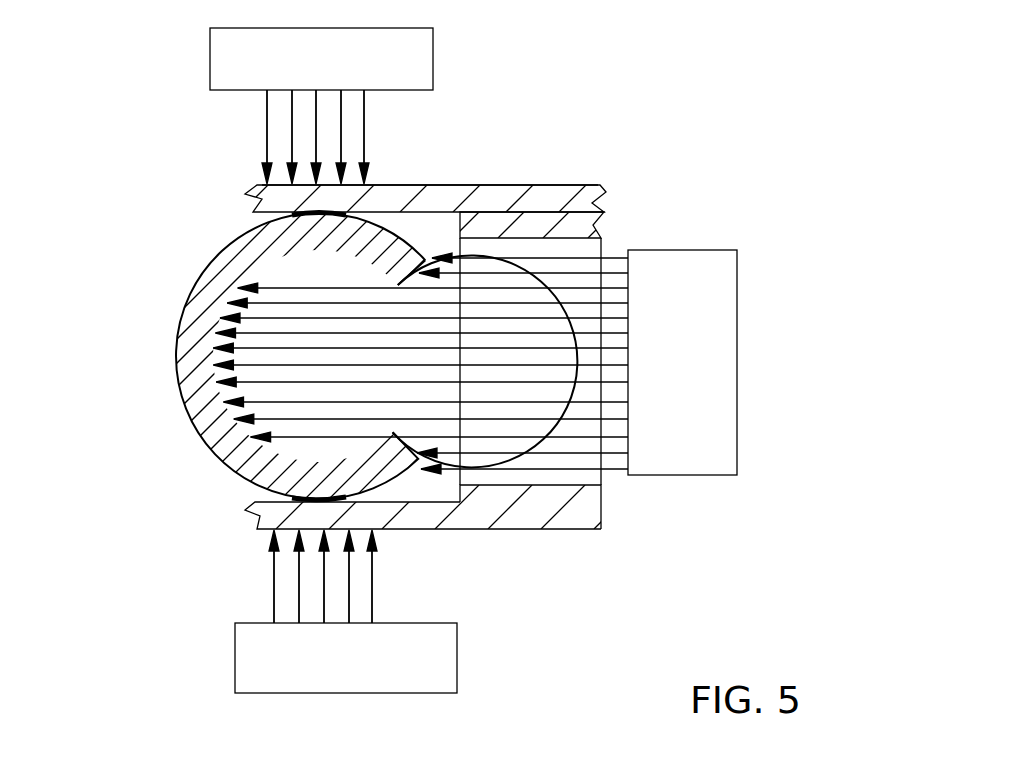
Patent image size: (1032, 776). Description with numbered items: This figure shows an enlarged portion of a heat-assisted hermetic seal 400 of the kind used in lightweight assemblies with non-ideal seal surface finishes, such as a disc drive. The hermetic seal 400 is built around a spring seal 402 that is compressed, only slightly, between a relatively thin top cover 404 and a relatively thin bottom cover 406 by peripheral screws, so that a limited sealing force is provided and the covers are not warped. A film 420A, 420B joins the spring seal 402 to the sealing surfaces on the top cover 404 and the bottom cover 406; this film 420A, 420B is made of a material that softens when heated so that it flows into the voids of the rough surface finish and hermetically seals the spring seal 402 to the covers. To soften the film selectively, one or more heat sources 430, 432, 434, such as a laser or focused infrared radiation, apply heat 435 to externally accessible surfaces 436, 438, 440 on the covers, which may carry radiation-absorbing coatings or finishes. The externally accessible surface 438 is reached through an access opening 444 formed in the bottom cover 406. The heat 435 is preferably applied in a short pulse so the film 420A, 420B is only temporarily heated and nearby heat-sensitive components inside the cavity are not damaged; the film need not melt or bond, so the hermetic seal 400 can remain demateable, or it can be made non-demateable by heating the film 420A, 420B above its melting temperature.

The hermetic seal 400 is at (135, 522).
The spring seal 402 is at (362, 360).
The top cover 404 is at (556, 185).
The bottom cover 406 is at (605, 226).
The film 420A is at (284, 216).
The film 420B is at (293, 500).
The heat source 430 is at (321, 59).
The heat source 432 is at (475, 362).
The heat source 434 is at (346, 658).
The heat 435 is at (267, 129).
The externally accessible surface 436 is at (328, 184).
The externally accessible surface 438 is at (213, 355).
The externally accessible surface 440 is at (315, 531).
The access opening 444 is at (583, 486).